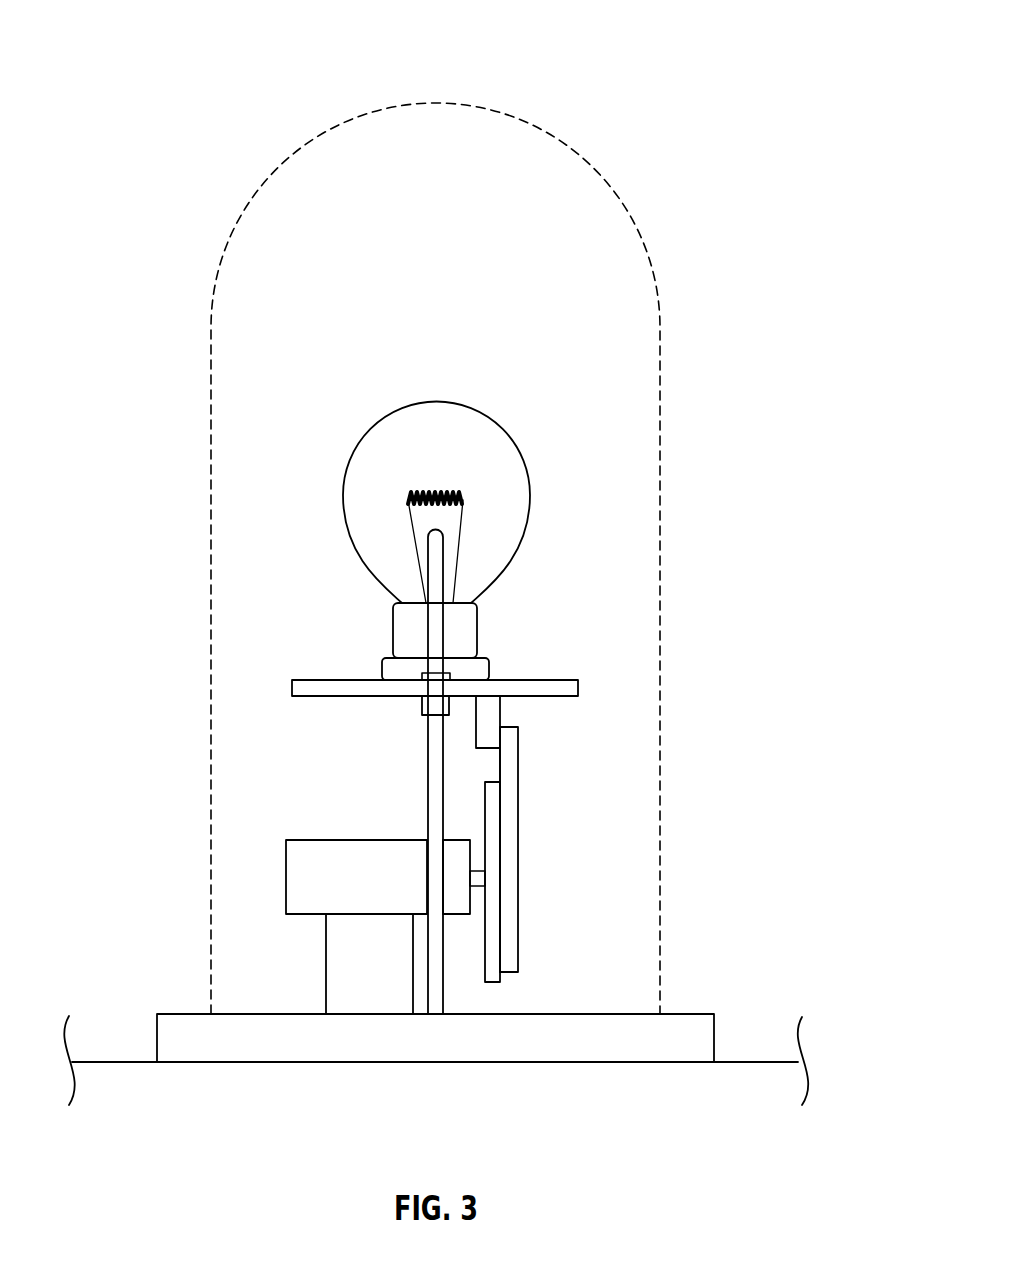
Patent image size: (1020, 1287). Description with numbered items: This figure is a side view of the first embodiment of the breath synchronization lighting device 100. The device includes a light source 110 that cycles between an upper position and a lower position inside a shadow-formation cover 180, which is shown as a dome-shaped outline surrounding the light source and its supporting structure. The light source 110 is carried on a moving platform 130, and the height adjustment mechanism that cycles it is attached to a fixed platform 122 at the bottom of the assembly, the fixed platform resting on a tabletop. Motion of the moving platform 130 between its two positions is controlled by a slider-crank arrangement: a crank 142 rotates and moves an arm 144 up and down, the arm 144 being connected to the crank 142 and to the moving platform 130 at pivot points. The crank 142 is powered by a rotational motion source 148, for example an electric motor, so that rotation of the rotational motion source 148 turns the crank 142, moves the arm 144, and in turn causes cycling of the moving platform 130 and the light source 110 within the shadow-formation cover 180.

The breath synchronization lighting device 100 is at (593, 82).
The light source 110 is at (512, 467).
The fixed platform 122 is at (680, 1028).
The moving platform 130 is at (578, 688).
The crank 142 is at (492, 976).
The arm 144 is at (510, 890).
The rotational motion source 148 is at (308, 870).
The shadow-formation cover 180 is at (662, 412).